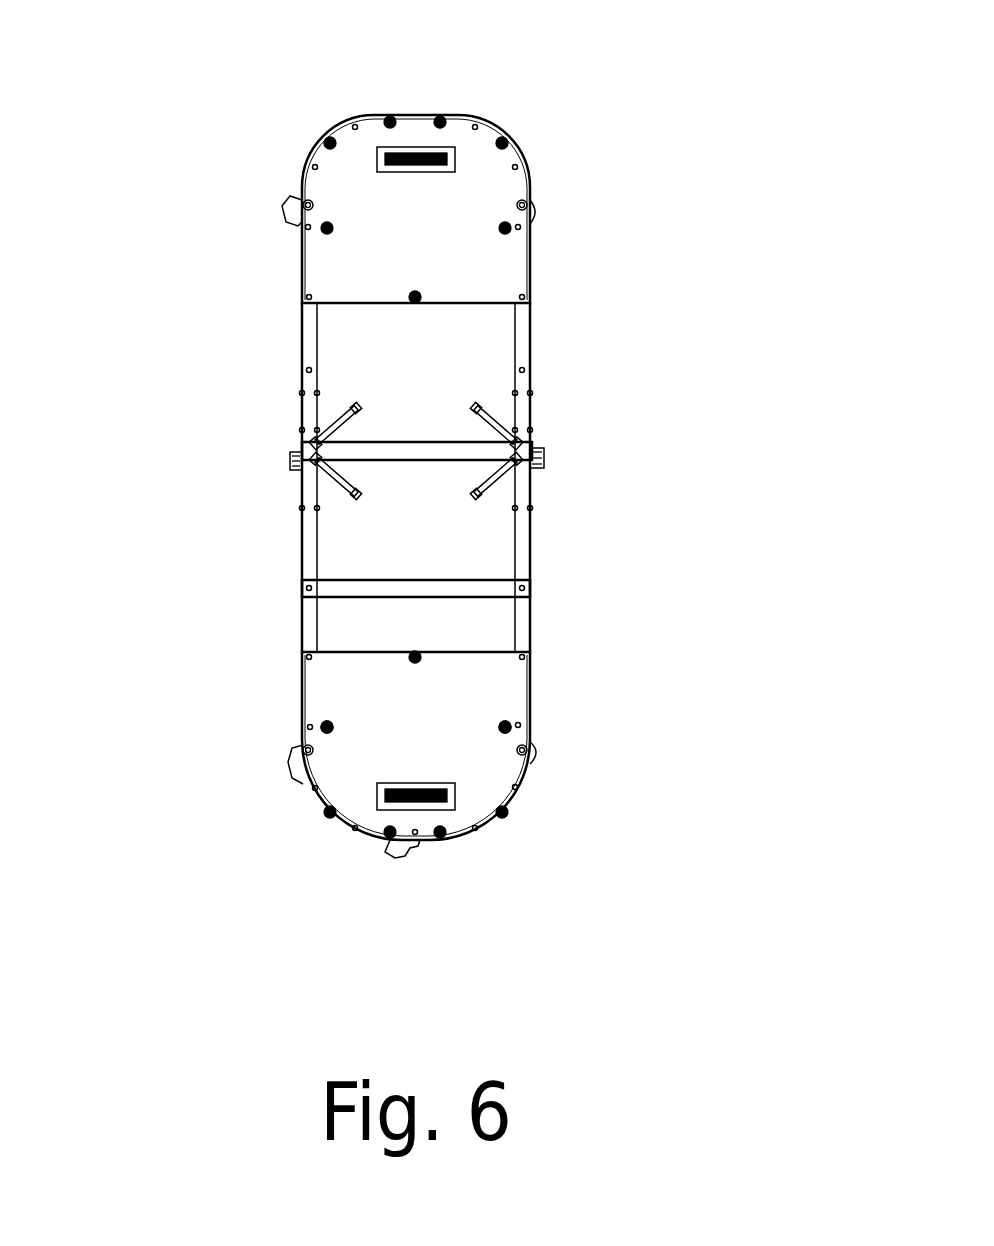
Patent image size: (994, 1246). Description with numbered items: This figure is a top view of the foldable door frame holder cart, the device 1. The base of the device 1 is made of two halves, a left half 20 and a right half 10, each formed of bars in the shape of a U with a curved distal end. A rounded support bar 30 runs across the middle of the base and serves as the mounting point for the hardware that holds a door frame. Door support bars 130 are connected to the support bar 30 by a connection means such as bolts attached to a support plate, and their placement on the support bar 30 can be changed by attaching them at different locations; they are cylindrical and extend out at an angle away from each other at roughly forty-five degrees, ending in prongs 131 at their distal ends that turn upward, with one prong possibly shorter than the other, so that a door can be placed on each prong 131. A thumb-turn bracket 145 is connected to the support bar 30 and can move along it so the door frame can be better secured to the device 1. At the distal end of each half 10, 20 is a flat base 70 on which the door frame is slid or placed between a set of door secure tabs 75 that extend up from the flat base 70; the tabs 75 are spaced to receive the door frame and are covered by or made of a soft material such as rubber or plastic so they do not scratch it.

The device 1 is at (245, 118).
The right half 10 is at (320, 817).
The left half 20 is at (368, 113).
The support bar 30 is at (510, 450).
The flat base 70 is at (347, 268).
The door secure tabs 75 is at (350, 227).
The door support bars 130 is at (347, 420).
The prongs 131 is at (475, 405).
The thumb-turn bracket 145 is at (275, 468).